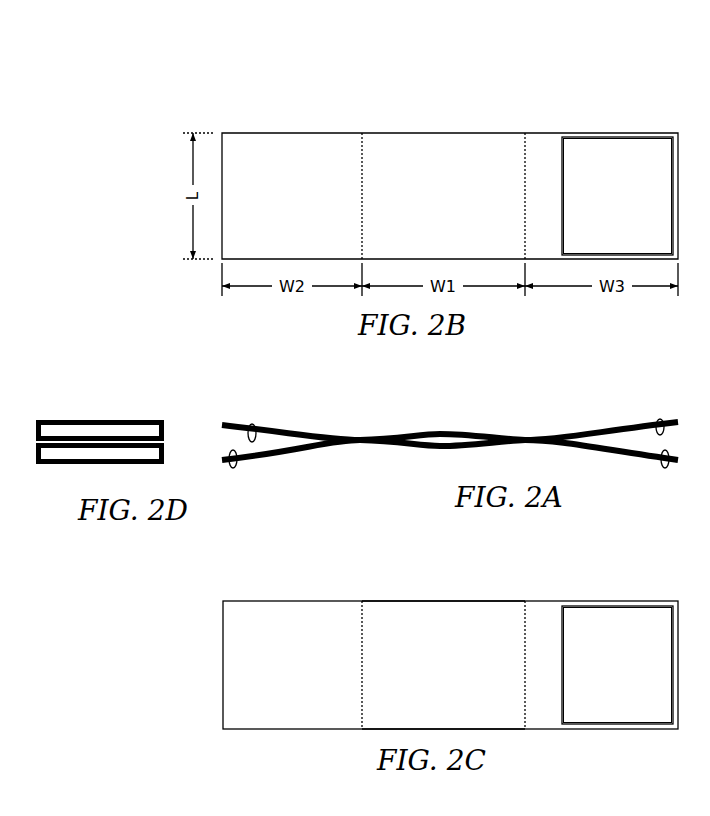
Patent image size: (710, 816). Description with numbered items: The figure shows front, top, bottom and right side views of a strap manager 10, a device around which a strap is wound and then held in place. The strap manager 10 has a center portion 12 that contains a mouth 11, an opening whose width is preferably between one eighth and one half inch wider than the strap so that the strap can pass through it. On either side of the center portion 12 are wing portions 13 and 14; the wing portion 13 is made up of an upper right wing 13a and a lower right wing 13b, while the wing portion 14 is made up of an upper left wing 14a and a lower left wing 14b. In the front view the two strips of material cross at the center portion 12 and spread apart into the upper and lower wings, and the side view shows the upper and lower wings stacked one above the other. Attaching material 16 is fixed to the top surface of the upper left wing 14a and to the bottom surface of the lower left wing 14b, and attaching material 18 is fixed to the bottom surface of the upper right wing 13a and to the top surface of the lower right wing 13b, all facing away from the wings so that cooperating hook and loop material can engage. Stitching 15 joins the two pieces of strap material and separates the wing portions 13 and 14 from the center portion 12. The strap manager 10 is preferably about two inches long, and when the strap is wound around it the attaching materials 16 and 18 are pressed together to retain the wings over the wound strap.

In FIG. 2B, the strap manager 10 is at (555, 25).
In FIG. 2A, the strap manager 10 is at (522, 392).
In FIG. 2D, the strap manager 10 is at (133, 390).
In FIG. 2C, the strap manager 10 is at (385, 562).
In FIG. 2A, the mouth 11 is at (440, 438).
In FIG. 2B, the center portion 12 is at (525, 117).
In FIG. 2C, the center portion 12 is at (482, 630).
In FIG. 2B, the wing portion 13 is at (362, 117).
In FIG. 2A, the upper right wing 13a is at (315, 430).
In FIG. 2A, the lower right wing 13b is at (312, 456).
In FIG. 2B, the wing portion 14 is at (678, 117).
In FIG. 2A, the upper left wing 14a is at (660, 420).
In FIG. 2A, the lower left wing 14b is at (668, 466).
In FIG. 2B, the stitching 15 is at (362, 183).
In FIG. 2C, the stitching 15 is at (362, 660).
In FIG. 2B, the attaching material 16 is at (617, 196).
In FIG. 2A, the attaching material 16 is at (633, 421).
In FIG. 2C, the attaching material 16 is at (617, 665).
In FIG. 2A, the attaching material 18 is at (252, 429).
In FIG. 2D, the attaching material 18 is at (72, 437).